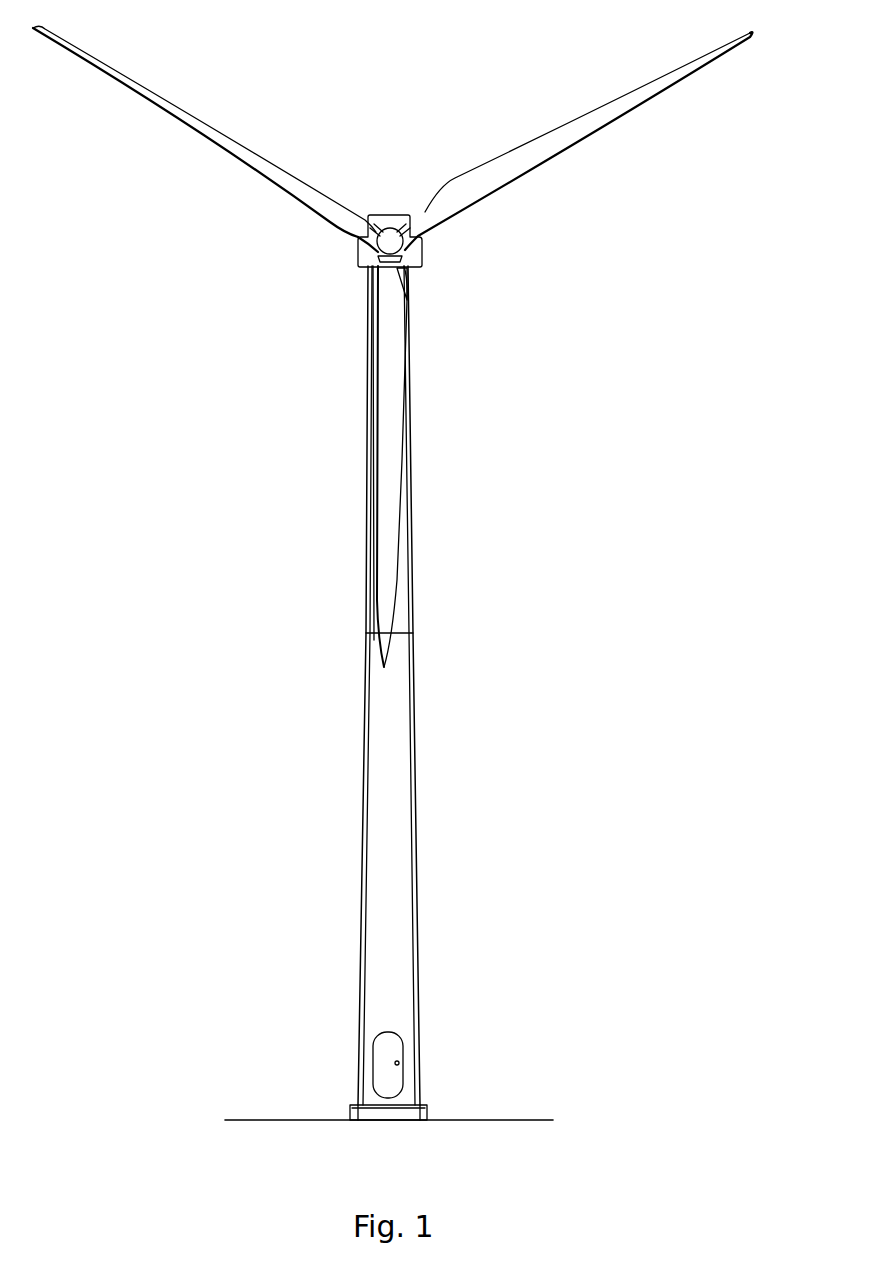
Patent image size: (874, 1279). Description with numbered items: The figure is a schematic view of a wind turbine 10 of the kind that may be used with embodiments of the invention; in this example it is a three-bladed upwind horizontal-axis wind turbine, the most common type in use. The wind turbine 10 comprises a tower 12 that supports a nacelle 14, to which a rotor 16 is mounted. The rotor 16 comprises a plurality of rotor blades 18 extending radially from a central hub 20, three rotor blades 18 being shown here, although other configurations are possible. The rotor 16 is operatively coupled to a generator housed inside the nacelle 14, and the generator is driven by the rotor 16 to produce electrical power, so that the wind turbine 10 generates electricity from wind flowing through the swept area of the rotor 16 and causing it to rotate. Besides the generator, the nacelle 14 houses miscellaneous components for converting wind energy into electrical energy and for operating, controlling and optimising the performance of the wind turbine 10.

The wind turbine 10 is at (272, 550).
The tower 12 is at (413, 678).
The nacelle 14 is at (422, 262).
The rotor 16 is at (266, 312).
The rotor blades 18 is at (268, 158).
The central hub 20 is at (386, 228).